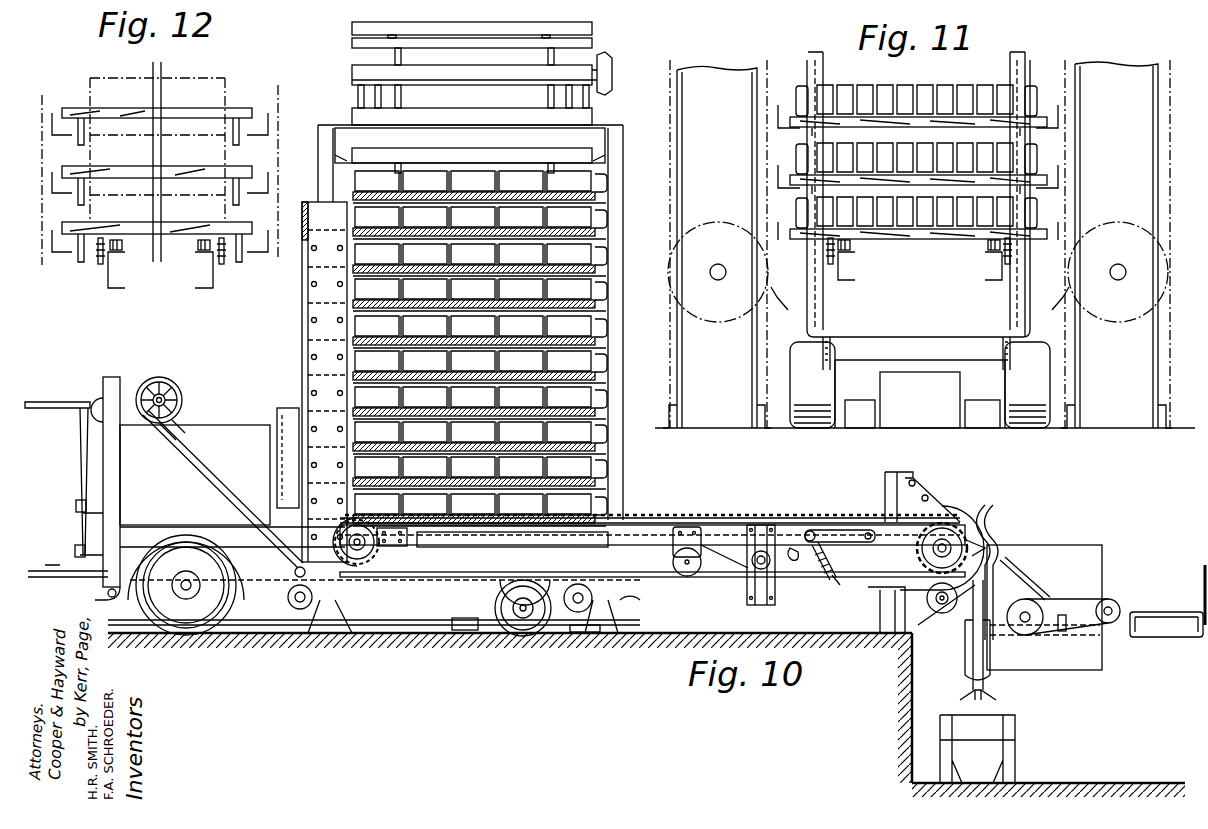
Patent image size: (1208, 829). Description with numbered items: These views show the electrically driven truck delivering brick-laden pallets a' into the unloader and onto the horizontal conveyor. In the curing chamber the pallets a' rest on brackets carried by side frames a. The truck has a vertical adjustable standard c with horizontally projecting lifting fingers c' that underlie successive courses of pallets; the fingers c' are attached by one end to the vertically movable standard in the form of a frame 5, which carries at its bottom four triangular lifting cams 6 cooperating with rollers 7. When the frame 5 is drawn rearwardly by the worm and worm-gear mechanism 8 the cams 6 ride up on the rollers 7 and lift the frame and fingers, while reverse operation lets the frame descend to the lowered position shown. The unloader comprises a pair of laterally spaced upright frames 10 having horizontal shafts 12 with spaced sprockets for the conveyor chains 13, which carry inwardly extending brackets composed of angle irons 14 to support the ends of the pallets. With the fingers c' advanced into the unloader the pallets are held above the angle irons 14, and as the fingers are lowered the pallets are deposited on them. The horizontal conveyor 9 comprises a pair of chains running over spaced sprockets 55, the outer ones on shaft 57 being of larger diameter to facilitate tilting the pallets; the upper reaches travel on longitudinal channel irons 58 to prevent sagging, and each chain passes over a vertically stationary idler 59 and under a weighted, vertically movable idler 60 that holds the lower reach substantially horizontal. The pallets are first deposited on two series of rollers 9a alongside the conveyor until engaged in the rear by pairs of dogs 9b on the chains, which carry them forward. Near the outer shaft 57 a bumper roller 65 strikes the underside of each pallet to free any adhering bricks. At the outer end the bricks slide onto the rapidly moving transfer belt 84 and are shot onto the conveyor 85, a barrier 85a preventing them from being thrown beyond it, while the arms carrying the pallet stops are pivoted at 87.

In FIG. 11, the frame 5 is at (932, 337).
In FIG. 10, the frame 5 is at (302, 335).
In FIG. 10, the triangular lifting cams 6 is at (332, 600).
In FIG. 10, the rollers 7 is at (292, 605).
In FIG. 10, the worm and worm-gear mechanism 8 is at (163, 378).
In FIG. 12, the horizontal conveyor 9 is at (122, 246).
In FIG. 11, the horizontal conveyor 9 is at (848, 245).
In FIG. 10, the horizontal conveyor 9 is at (733, 517).
In FIG. 12, the rollers 9a is at (102, 265).
In FIG. 11, the rollers 9a is at (835, 262).
In FIG. 10, the rollers 9a is at (438, 560).
In FIG. 10, the dogs 9b is at (338, 520).
In FIG. 11, the upright frames 10 is at (917, 245).
In FIG. 11, the horizontal shafts 12 is at (718, 264).
In FIG. 11, the conveyor chains 13 is at (672, 100).
In FIG. 10, the conveyor chains 13 is at (665, 100).
In FIG. 12, the angle irons 14 is at (58, 116).
In FIG. 11, the angle irons 14 is at (780, 107).
In FIG. 10, the angle irons 14 is at (352, 80).
In FIG. 10, the sprockets 55 is at (345, 542).
In FIG. 10, the horizontal shaft 57 is at (980, 510).
In FIG. 10, the longitudinal channel irons 58 is at (360, 552).
In FIG. 10, the vertically stationary idler 59 is at (690, 577).
In FIG. 10, the vertically movable idler 60 is at (750, 560).
In FIG. 10, the roller 65 is at (805, 525).
In FIG. 10, the transfer belt 84 is at (1080, 600).
In FIG. 10, the conveyor 85 is at (1172, 617).
In FIG. 10, the barrier 85a is at (1203, 580).
In FIG. 10, the pivot 87 is at (948, 612).
In FIG. 11, the side frames a is at (912, 243).
In FIG. 12, the brick-laden pallets a' is at (166, 154).
In FIG. 11, the brick-laden pallets a' is at (918, 178).
In FIG. 11, the vertical adjustable standard c is at (915, 142).
In FIG. 12, the lifting fingers c' is at (162, 205).
In FIG. 11, the lifting fingers c' is at (916, 158).
In FIG. 10, the lifting fingers c' is at (622, 344).